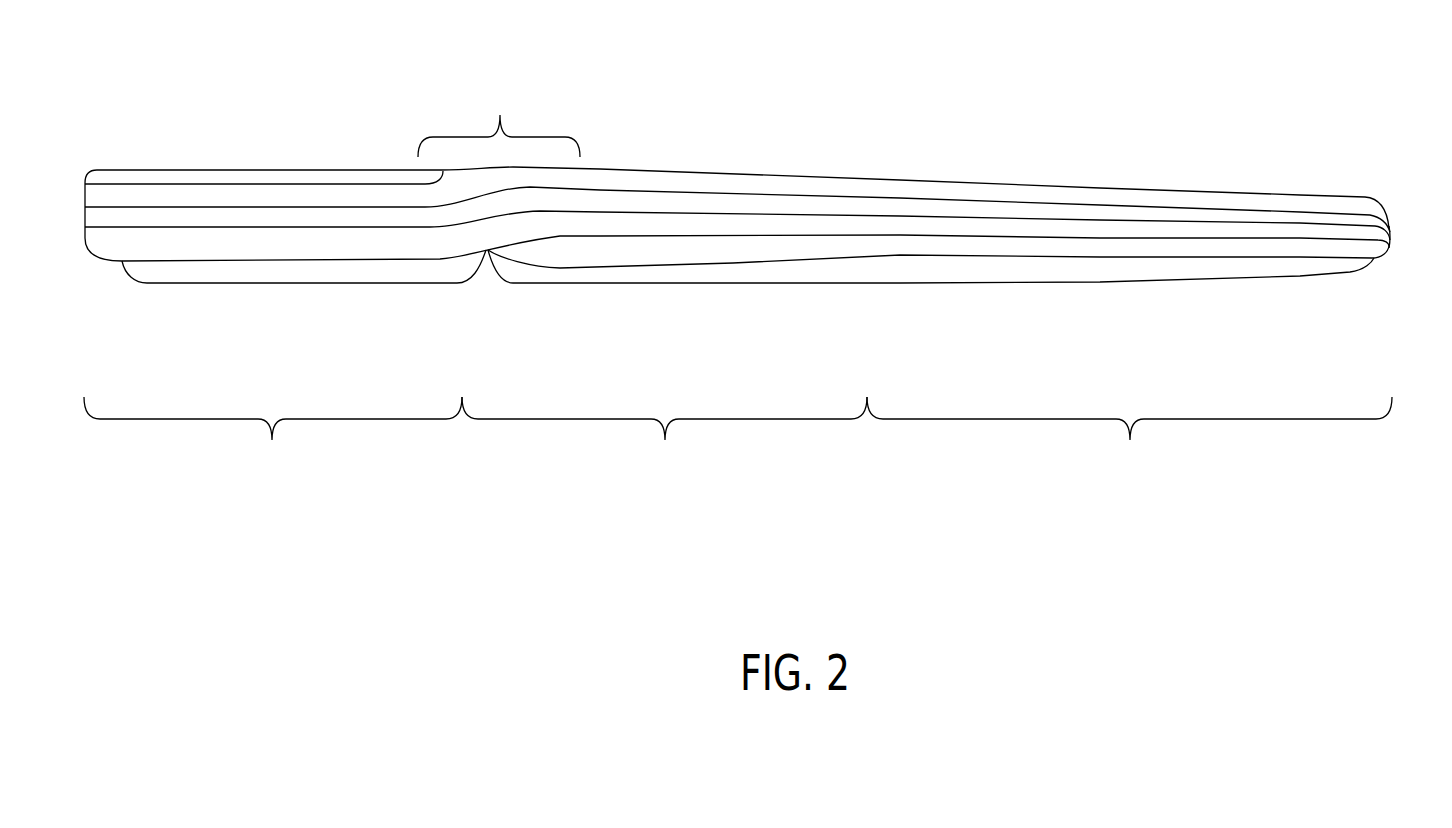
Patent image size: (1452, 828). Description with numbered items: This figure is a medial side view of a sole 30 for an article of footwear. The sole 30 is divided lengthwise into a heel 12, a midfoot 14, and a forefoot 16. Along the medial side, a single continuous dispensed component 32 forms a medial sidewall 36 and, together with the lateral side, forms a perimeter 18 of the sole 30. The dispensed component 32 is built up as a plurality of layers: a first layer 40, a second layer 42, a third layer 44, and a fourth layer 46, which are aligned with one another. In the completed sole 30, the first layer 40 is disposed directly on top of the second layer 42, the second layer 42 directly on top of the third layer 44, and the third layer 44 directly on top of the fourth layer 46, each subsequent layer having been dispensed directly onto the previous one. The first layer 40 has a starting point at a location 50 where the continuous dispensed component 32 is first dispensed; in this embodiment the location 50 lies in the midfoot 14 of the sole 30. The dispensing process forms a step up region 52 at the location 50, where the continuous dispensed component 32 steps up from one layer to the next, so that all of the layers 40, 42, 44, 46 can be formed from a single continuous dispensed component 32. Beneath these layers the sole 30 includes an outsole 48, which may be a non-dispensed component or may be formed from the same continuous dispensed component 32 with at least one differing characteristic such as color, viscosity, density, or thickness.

The heel 12 is at (273, 440).
The midfoot 14 is at (664, 440).
The forefoot 16 is at (1129, 440).
The perimeter 18 is at (1390, 233).
The sole 30 is at (1117, 124).
The dispensed component 32 is at (1283, 207).
The medial sidewall 36 is at (786, 212).
The first layer 40 is at (185, 174).
The second layer 42 is at (262, 200).
The third layer 44 is at (175, 217).
The fourth layer 46 is at (218, 243).
The outsole 48 is at (300, 270).
The location 50 is at (422, 179).
The step up region 52 is at (499, 114).